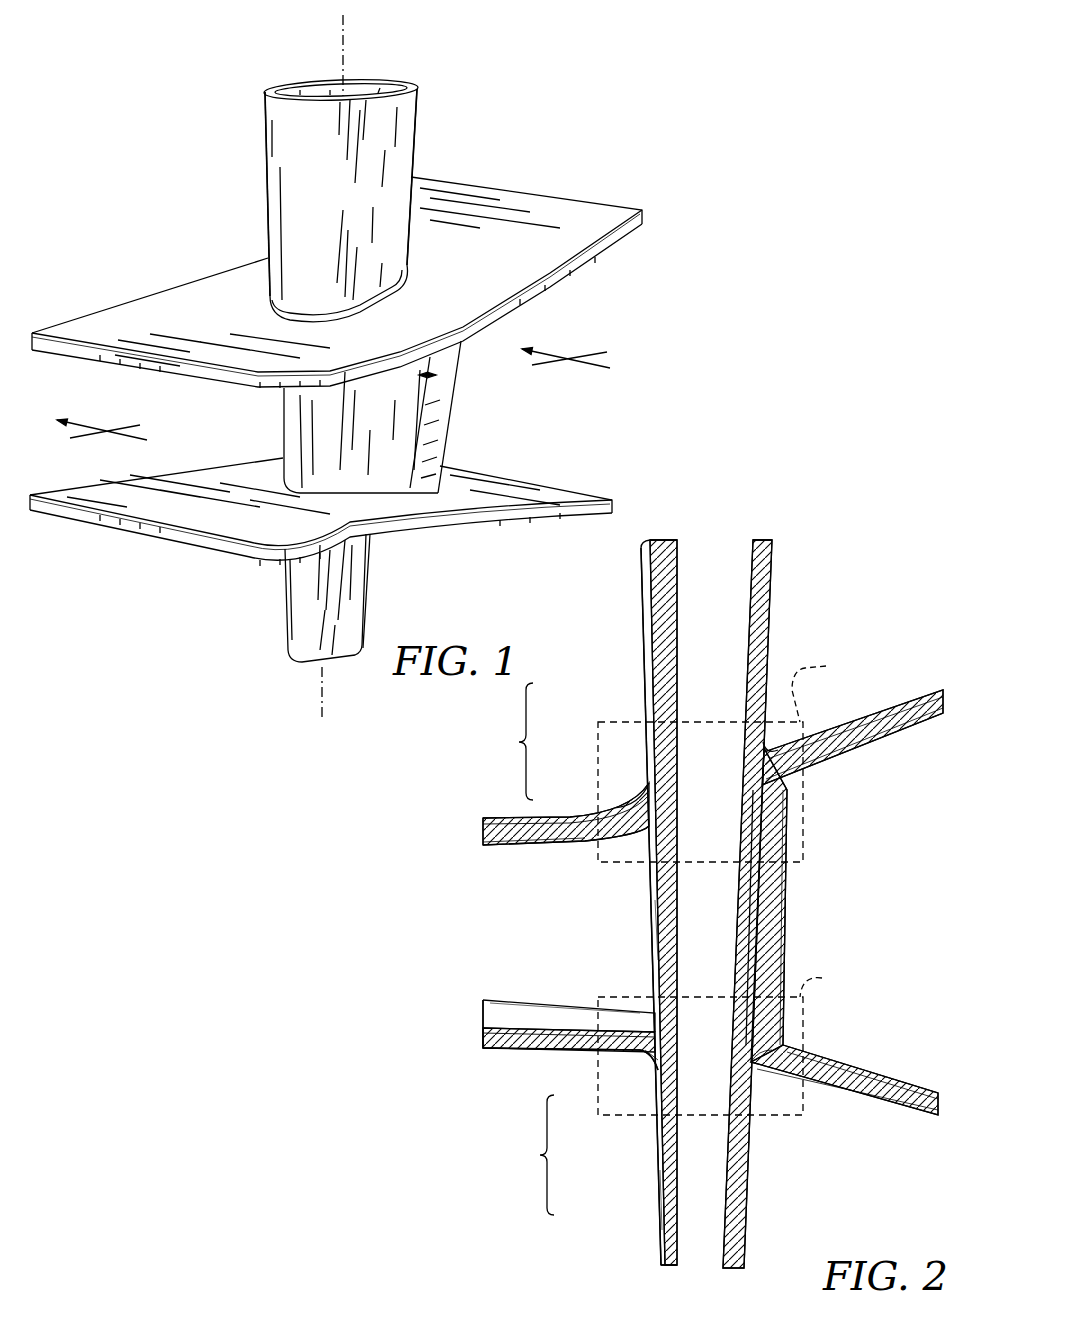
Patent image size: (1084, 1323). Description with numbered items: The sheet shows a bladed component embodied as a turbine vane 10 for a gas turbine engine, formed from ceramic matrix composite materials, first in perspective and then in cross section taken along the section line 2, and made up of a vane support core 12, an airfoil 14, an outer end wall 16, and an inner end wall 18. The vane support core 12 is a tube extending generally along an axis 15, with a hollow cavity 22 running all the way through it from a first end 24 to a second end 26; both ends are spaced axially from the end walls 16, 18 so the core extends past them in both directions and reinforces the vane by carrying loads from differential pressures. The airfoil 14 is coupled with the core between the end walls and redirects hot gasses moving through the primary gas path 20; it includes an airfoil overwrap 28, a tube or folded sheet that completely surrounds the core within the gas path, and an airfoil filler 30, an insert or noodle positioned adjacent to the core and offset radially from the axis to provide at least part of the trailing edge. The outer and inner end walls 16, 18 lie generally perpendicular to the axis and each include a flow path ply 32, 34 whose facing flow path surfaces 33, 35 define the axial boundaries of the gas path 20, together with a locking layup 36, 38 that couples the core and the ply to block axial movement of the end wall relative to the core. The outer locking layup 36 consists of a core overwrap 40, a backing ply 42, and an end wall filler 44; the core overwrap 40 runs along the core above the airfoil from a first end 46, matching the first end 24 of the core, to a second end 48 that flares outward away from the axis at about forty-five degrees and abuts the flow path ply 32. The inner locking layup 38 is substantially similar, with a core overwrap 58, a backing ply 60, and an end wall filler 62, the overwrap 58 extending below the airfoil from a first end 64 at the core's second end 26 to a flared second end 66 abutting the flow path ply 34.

In FIG. 1, the turbine vane 10 is at (666, 97).
In FIG. 2, the turbine vane 10 is at (873, 526).
In FIG. 1, the vane support core 12 is at (359, 175).
In FIG. 2, the vane support core 12 is at (634, 871).
In FIG. 1, the airfoil 14 is at (367, 417).
In FIG. 2, the airfoil 14 is at (638, 934).
In FIG. 1, the axis 15 is at (338, 22).
In FIG. 1, the outer end wall 16 is at (164, 304).
In FIG. 2, the outer end wall 16 is at (523, 796).
In FIG. 1, the inner end wall 18 is at (321, 542).
In FIG. 2, the inner end wall 18 is at (523, 1085).
In FIG. 1, the primary gas path 20 is at (136, 496).
In FIG. 2, the primary gas path 20 is at (613, 981).
In FIG. 1, the hollow cavity 22 is at (333, 80).
In FIG. 2, the hollow cavity 22 is at (833, 873).
In FIG. 1, the first end 24 is at (279, 78).
In FIG. 2, the first end 24 is at (663, 532).
In FIG. 1, the second end 26 is at (287, 665).
In FIG. 2, the second end 26 is at (666, 1268).
In FIG. 1, the airfoil overwrap 28 is at (403, 437).
In FIG. 2, the airfoil overwrap 28 is at (808, 905).
In FIG. 1, the airfoil filler 30 is at (440, 378).
In FIG. 2, the airfoil filler 30 is at (765, 920).
In FIG. 2, the flow path ply 32 is at (480, 849).
In FIG. 2, the flow path surface 33 is at (552, 847).
In FIG. 2, the flow path ply 34 is at (487, 1000).
In FIG. 2, the flow path surface 35 is at (558, 1015).
In FIG. 2, the locking layup 36 is at (507, 741).
In FIG. 2, the locking layup 38 is at (529, 1155).
In FIG. 2, the core overwrap 40 is at (643, 683).
In FIG. 2, the backing ply 42 is at (572, 827).
In FIG. 2, the end wall filler 44 is at (652, 805).
In FIG. 2, the first end 46 is at (783, 526).
In FIG. 2, the second end 48 is at (796, 780).
In FIG. 2, the core overwrap 58 is at (660, 1183).
In FIG. 2, the backing ply 60 is at (608, 1050).
In FIG. 2, the end wall filler 62 is at (652, 1055).
In FIG. 2, the first end 64 is at (843, 1140).
In FIG. 2, the second end 66 is at (778, 1046).
In FIG. 1, the section line 2- 2 is at (345, 405).